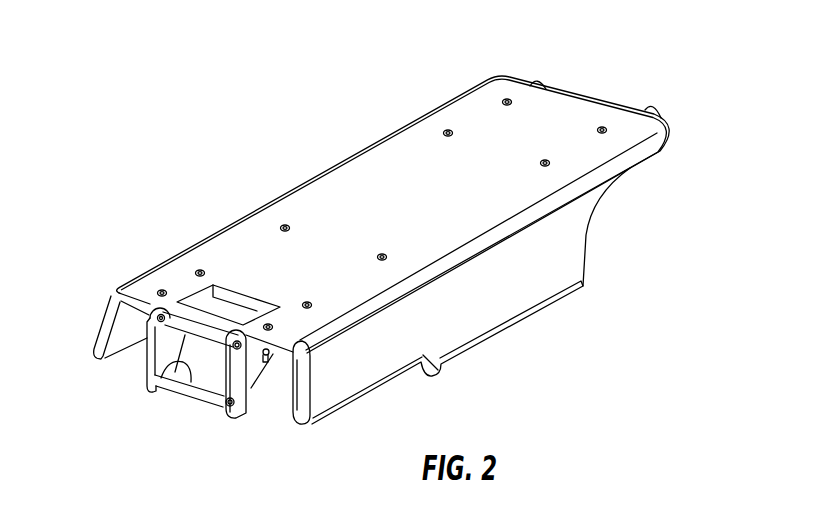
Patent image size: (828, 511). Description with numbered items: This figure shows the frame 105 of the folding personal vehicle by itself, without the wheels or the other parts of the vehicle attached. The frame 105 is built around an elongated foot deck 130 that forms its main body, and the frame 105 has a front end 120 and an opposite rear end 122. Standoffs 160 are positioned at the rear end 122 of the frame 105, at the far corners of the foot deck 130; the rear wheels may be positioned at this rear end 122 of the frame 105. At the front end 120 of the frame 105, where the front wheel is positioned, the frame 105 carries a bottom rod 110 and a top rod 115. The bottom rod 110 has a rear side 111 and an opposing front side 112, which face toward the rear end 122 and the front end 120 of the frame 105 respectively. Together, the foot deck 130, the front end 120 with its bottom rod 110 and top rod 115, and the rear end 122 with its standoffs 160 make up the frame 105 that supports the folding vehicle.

The frame 105 is at (173, 75).
The bottom rod 110 is at (204, 396).
The rear side 111 is at (161, 378).
The front side 112 is at (181, 392).
The top rod 115 is at (167, 322).
The front end 120 is at (133, 300).
The rear end 122 is at (591, 99).
The foot deck 130 is at (353, 200).
The standoffs 160 is at (540, 80).